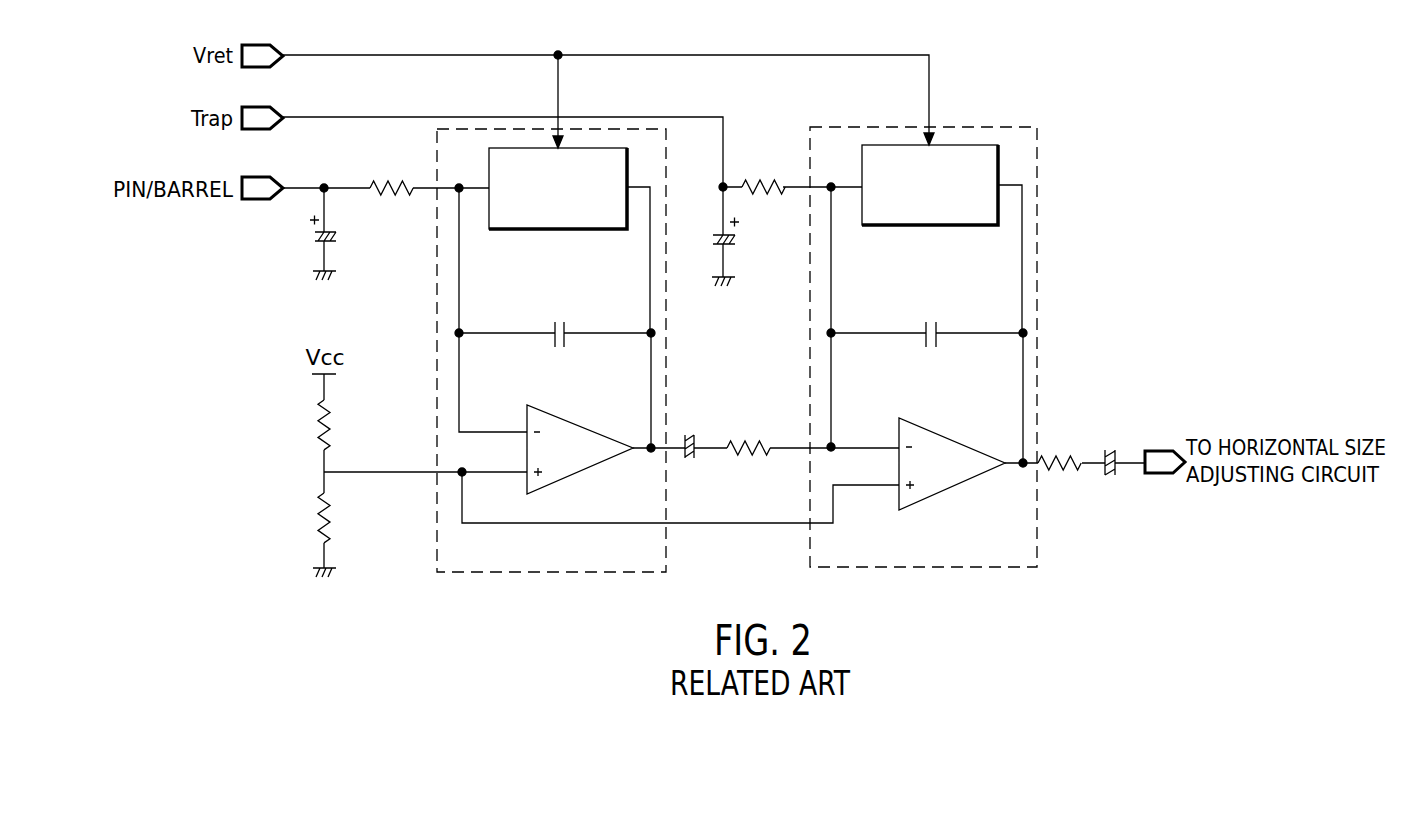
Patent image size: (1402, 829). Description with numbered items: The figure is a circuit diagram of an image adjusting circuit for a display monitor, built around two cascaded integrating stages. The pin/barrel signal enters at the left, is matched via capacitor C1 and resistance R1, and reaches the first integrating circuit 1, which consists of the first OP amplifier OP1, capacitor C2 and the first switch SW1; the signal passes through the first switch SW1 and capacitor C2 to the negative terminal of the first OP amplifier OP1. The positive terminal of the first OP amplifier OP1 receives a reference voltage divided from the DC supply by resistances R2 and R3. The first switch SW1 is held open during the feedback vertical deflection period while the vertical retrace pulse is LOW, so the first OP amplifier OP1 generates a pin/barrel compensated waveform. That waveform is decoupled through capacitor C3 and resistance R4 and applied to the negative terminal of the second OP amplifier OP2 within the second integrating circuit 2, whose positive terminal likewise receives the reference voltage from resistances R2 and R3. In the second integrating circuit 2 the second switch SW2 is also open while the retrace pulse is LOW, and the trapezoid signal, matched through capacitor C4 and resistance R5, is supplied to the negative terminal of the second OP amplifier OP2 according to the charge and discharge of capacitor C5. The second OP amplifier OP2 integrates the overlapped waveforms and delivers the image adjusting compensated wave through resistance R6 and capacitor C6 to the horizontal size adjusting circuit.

The first integrating circuit 1 is at (600, 575).
The second integrating circuit 2 is at (945, 570).
The resistance R1 is at (391, 175).
The resistance R2 is at (345, 425).
The resistance R3 is at (345, 518).
The resistance R4 is at (748, 434).
The resistance R5 is at (763, 173).
The resistance R6 is at (1059, 449).
The capacitor C1 is at (341, 234).
The capacitor C2 is at (555, 318).
The capacitor C3 is at (688, 431).
The capacitor C4 is at (742, 236).
The capacitor C5 is at (927, 318).
The capacitor C6 is at (1107, 447).
The first switch SW1 is at (558, 188).
The second switch SW2 is at (930, 185).
The first OP amplifier OP1 is at (580, 449).
The second OP amplifier OP2 is at (952, 464).